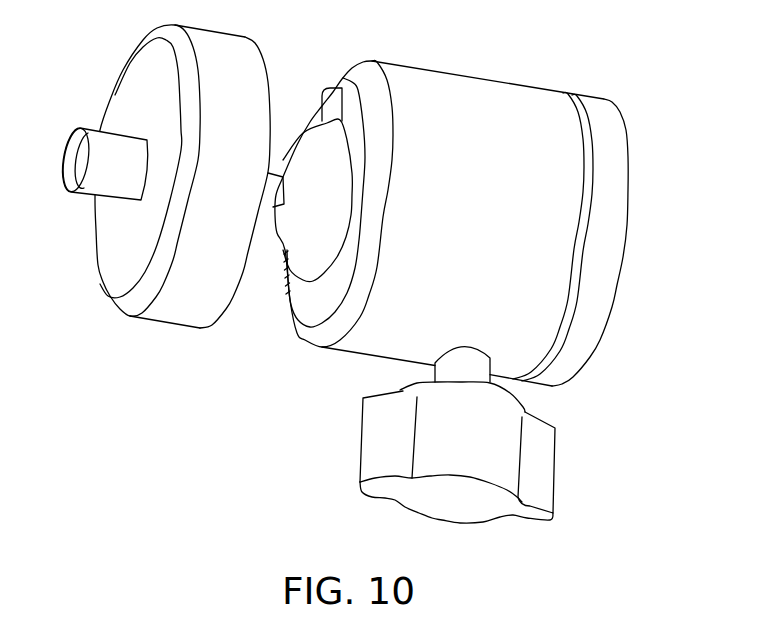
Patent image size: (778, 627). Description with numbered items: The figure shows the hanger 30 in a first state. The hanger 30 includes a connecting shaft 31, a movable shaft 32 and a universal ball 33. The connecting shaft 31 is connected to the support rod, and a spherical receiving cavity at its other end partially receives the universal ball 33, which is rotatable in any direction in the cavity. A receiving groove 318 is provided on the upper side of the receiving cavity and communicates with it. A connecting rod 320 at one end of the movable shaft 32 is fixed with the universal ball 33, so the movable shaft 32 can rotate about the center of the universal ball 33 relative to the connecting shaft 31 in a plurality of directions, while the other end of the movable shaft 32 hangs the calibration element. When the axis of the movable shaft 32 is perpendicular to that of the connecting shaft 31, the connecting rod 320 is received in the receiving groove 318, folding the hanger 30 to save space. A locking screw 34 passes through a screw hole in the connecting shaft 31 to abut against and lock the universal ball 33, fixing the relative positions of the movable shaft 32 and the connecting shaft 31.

The hanger 30 is at (603, 33).
The connecting shaft 31 is at (443, 107).
The movable shaft 32 is at (127, 243).
The universal ball 33 is at (307, 155).
The receiving groove 318 is at (332, 100).
The connecting rod 320 is at (272, 198).
The locking screw 34 is at (530, 458).